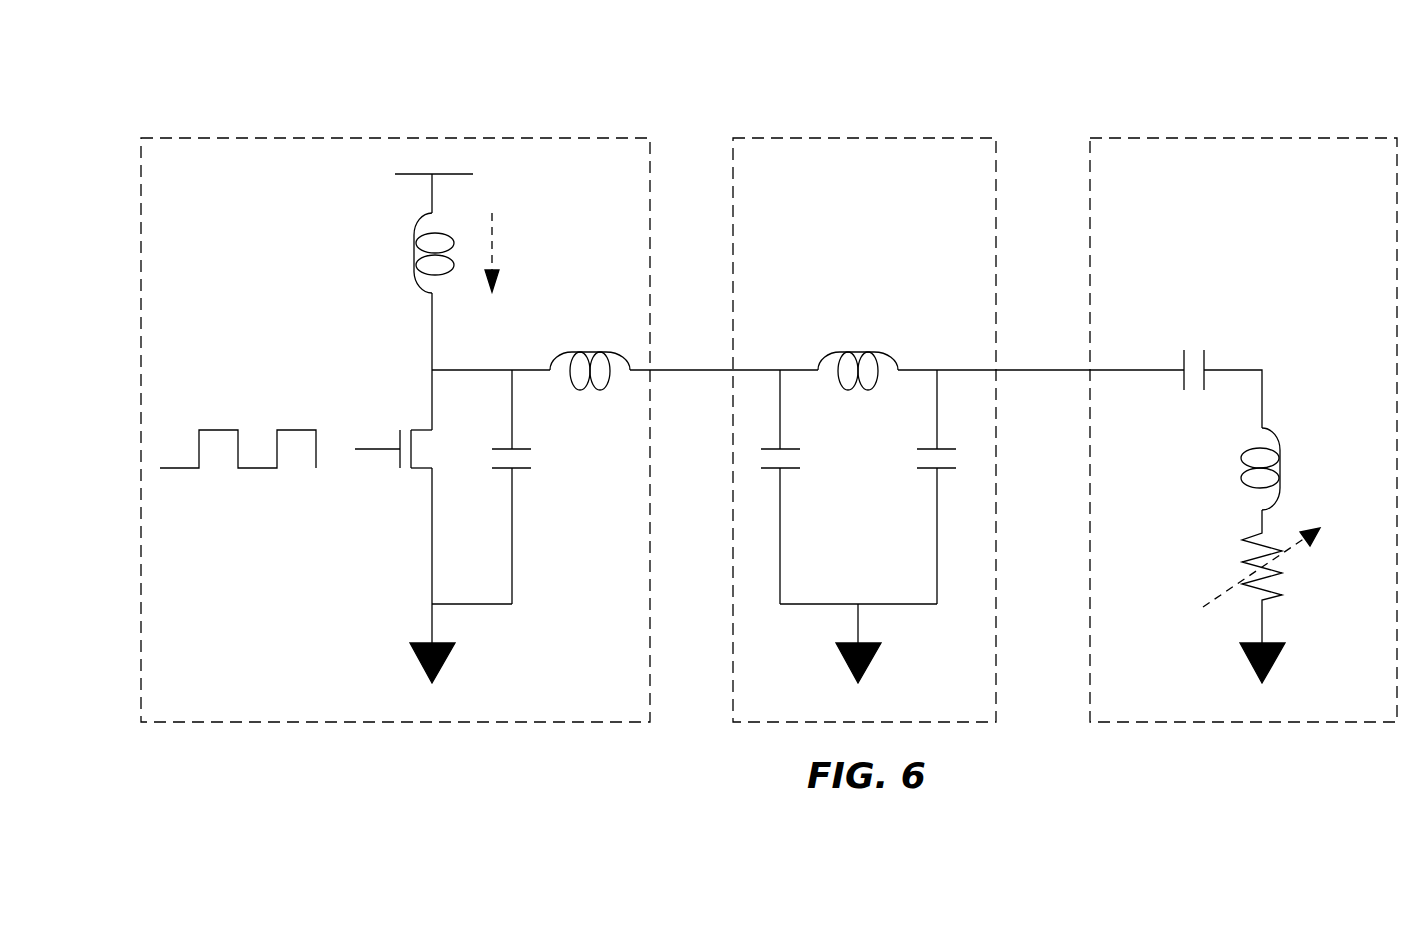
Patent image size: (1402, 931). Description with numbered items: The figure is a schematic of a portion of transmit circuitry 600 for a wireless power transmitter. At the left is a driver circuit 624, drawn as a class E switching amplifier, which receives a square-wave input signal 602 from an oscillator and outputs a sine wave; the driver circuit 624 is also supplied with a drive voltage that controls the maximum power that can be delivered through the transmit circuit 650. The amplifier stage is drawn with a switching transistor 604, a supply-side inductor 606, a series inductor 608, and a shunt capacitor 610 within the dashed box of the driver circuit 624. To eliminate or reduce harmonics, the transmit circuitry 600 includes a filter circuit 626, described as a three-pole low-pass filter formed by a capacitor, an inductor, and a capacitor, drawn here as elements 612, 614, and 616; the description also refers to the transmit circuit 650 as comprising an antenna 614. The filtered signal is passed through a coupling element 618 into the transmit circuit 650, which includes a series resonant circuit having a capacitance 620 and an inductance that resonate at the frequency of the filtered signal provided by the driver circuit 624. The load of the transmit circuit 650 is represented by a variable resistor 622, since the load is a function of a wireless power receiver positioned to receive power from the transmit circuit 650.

The transmit circuitry 600 is at (769, 376).
The input signal 602 is at (215, 429).
The transistor 604 is at (420, 428).
The inductor 606 is at (412, 235).
The inductor 608 is at (588, 350).
The capacitor 610 is at (520, 445).
The inductor 612 is at (878, 350).
The antenna 614 is at (788, 448).
The capacitor 616 is at (946, 448).
The capacitor 618 is at (1204, 362).
The capacitance 620 is at (1270, 428).
The variable resistor 622 is at (1258, 533).
The driver circuit 624 is at (508, 138).
The filter circuit 626 is at (925, 138).
The transmit circuit 650 is at (1313, 138).